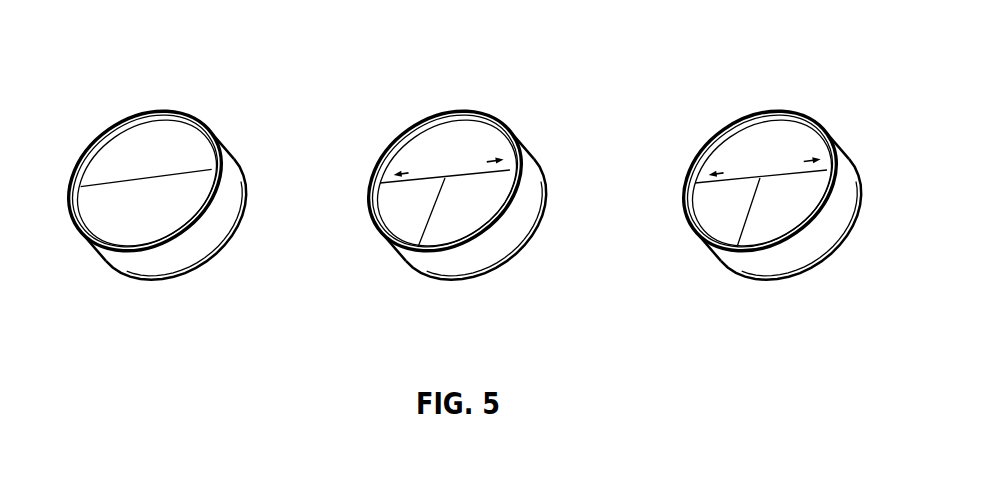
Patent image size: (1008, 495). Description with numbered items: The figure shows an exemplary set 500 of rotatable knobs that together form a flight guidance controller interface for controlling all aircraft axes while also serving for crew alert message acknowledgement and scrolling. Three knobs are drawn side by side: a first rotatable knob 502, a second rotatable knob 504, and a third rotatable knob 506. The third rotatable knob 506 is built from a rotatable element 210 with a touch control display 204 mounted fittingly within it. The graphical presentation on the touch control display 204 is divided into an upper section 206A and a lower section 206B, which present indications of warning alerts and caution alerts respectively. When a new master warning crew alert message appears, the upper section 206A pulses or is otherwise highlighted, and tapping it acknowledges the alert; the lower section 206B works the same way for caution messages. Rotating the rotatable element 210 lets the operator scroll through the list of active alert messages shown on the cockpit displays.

The set of rotatable knobs 500 is at (100, 33).
The third rotatable knob 506 is at (222, 120).
The first rotatable knob 502 is at (522, 120).
The second rotatable knob 504 is at (834, 120).
The touch control display 204 is at (140, 225).
The upper section 206A is at (148, 130).
The lower section 206B is at (112, 232).
The rotatable element 210 is at (207, 232).